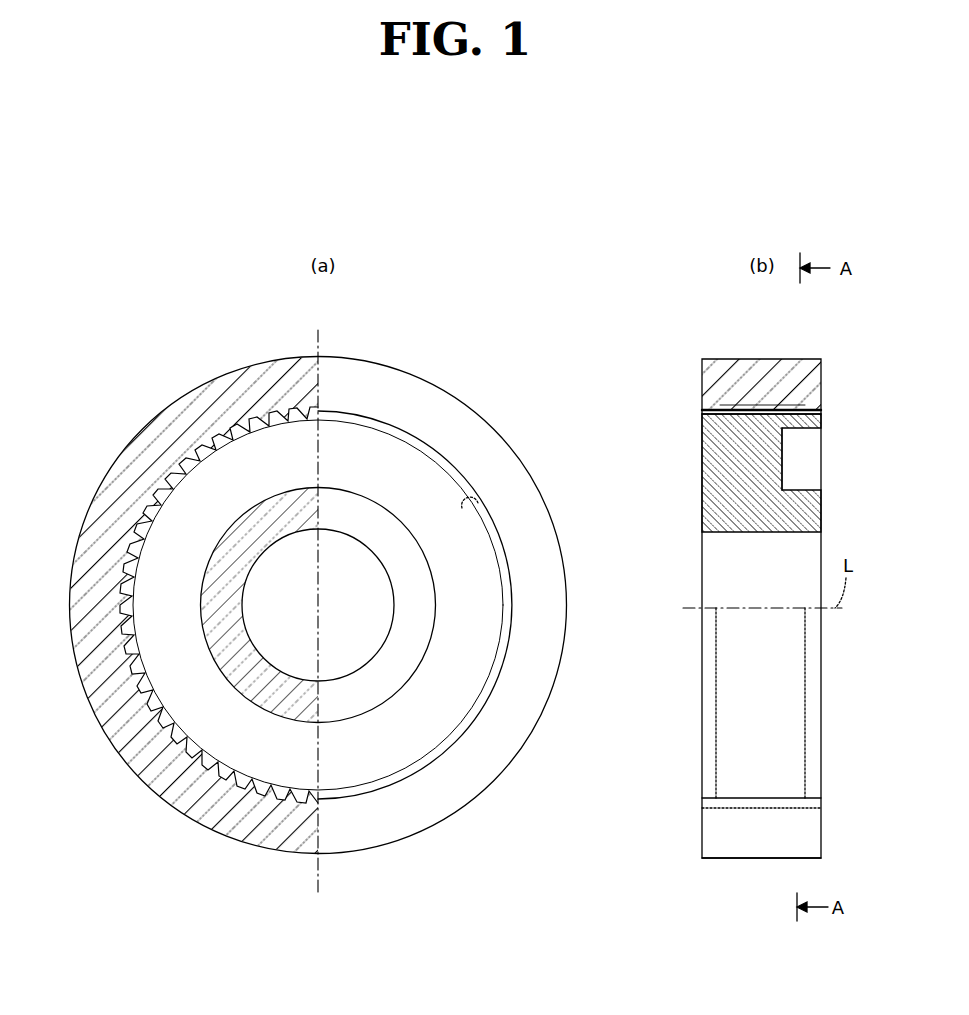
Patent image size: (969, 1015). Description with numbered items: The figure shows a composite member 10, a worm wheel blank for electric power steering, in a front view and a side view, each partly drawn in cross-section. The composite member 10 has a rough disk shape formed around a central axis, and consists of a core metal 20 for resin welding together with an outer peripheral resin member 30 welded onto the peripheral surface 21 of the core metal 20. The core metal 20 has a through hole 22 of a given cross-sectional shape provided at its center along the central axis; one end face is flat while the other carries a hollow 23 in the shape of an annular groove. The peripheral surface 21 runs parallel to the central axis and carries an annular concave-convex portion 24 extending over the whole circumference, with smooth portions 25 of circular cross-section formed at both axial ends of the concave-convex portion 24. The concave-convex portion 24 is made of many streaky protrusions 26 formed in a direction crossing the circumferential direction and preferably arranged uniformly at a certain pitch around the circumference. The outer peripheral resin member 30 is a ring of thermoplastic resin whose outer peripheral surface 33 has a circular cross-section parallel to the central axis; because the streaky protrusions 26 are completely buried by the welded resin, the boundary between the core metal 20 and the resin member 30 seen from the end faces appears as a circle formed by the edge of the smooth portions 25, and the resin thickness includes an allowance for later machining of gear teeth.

The composite member 10 is at (460, 378).
The core metal for resin welding 20 is at (484, 713).
The peripheral surface 21 is at (112, 743).
The through hole 22 is at (358, 678).
The hollow 23 is at (490, 503).
The concave-convex portion 24 is at (228, 425).
The smooth portions 25 is at (352, 803).
The streaky protrusions 26 is at (176, 460).
The outer peripheral resin member 30 is at (505, 770).
The outer peripheral surface 33 is at (102, 475).